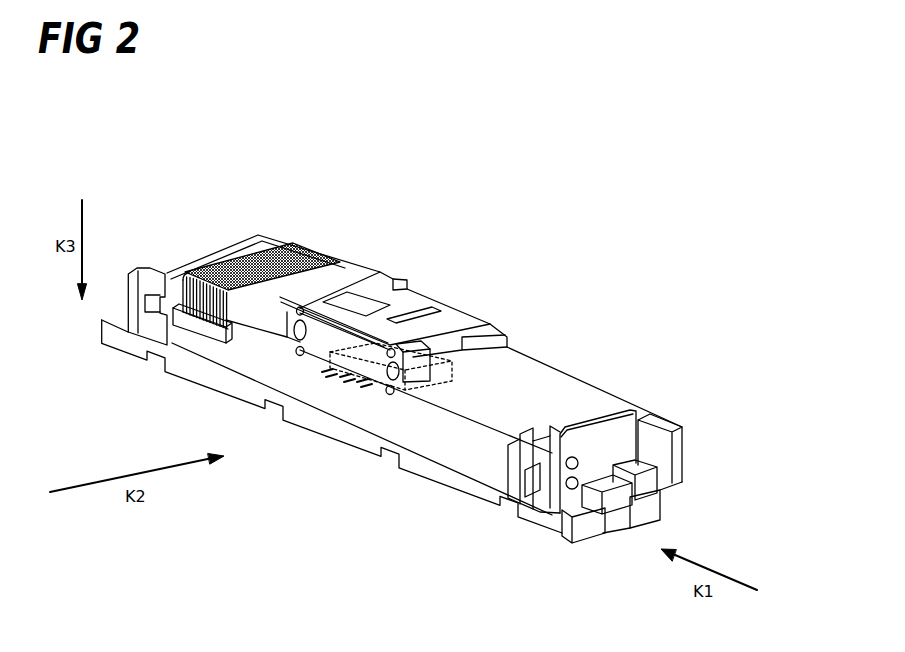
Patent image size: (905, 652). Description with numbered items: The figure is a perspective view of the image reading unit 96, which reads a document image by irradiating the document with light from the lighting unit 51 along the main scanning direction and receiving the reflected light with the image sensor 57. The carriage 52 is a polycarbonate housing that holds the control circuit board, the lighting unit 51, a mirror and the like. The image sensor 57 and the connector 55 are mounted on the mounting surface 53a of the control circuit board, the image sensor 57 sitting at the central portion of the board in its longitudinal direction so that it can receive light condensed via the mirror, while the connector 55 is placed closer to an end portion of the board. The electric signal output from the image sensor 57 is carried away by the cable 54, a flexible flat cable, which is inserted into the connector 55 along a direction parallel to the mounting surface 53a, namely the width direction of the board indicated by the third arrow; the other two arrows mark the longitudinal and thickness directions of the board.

The lighting unit 51 is at (617, 522).
The carriage 52 is at (547, 383).
The mounting surface 53a is at (452, 444).
The cable 54 is at (233, 270).
The connector 55 is at (198, 330).
The image sensor 57 is at (353, 383).
The image reading unit 96 is at (452, 264).